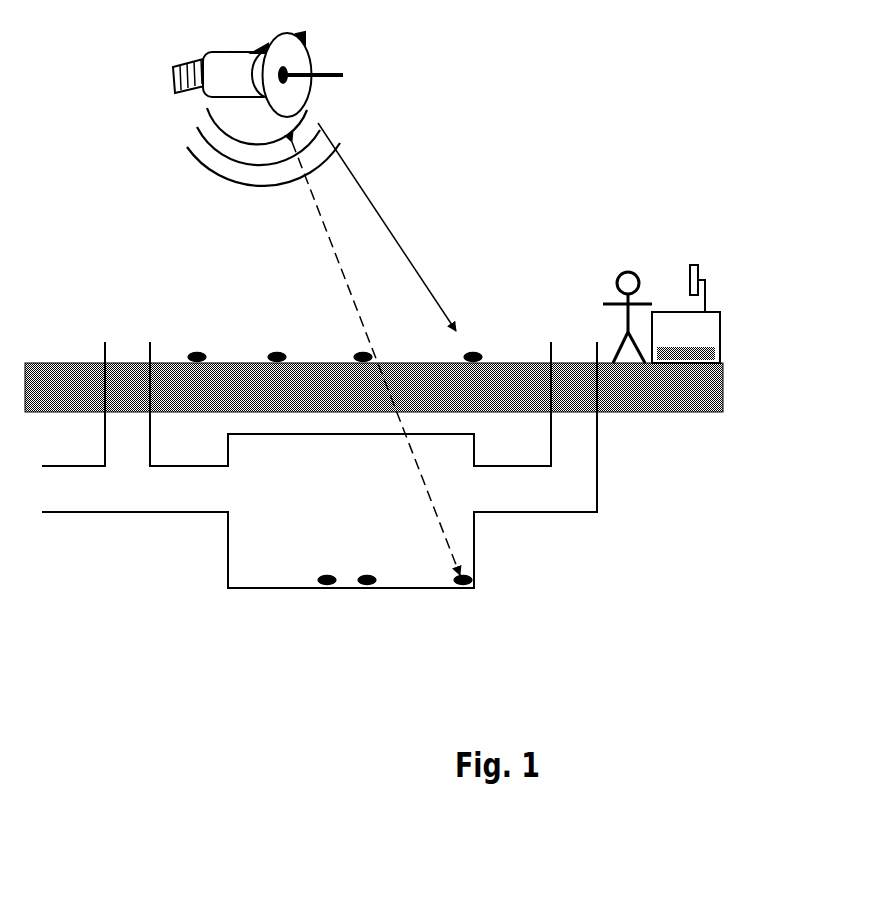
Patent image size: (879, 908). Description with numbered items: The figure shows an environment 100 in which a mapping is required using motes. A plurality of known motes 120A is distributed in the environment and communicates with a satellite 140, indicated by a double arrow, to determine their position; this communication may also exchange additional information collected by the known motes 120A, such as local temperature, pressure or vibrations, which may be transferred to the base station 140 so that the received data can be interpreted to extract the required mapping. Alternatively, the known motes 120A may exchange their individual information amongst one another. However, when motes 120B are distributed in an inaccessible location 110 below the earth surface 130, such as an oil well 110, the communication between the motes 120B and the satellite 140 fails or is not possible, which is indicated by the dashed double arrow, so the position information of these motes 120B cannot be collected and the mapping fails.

The environment 100 is at (582, 116).
The inaccessible location 110 is at (202, 493).
The known motes 120A is at (475, 355).
The motes 120B is at (463, 586).
The earth surface 130 is at (50, 385).
The satellite 140 is at (198, 99).